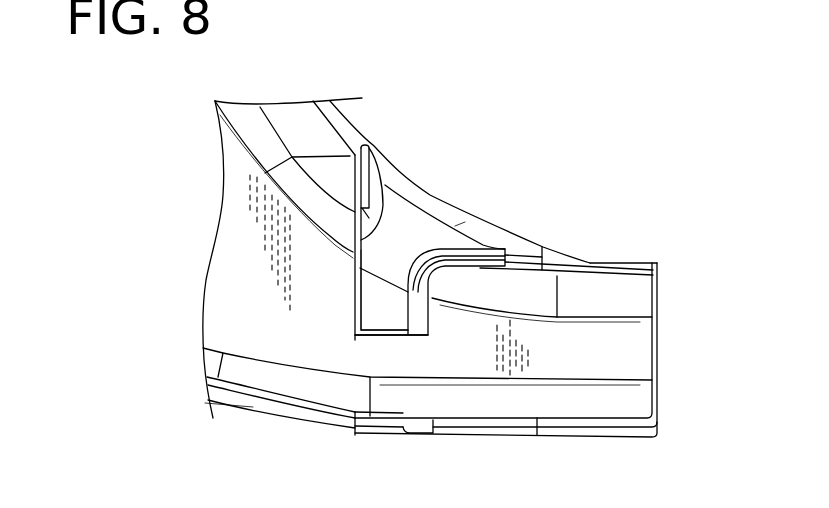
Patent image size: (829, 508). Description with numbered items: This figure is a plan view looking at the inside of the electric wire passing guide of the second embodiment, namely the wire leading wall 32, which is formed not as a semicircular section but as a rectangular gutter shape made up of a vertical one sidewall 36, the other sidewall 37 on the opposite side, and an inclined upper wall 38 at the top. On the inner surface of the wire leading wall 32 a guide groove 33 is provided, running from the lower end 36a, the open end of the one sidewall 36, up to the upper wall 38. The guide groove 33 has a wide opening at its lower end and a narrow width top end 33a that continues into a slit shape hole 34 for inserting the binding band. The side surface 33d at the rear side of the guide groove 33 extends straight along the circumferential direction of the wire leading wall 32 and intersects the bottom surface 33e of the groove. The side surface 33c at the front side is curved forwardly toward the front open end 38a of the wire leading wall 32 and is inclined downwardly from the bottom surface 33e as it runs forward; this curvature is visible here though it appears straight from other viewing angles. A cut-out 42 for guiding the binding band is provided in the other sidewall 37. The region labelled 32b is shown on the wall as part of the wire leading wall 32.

The wire leading wall 32 is at (617, 264).
The upper panel portion 32b is at (409, 181).
The guide groove 33 is at (461, 280).
The narrow width top end 33a is at (383, 320).
The side surface at front side of guide groove 33c is at (470, 258).
The side surface at rear side of guide groove 33d is at (374, 140).
The bottom surface of guide groove 33e is at (390, 273).
The slit shape hole 34 is at (375, 330).
The one sidewall 36 is at (477, 214).
The lower end 36a is at (460, 224).
The other sidewall 37 is at (518, 438).
The upper wall 38 is at (602, 352).
The front open end 38a is at (658, 360).
The cut-out 42 is at (408, 430).